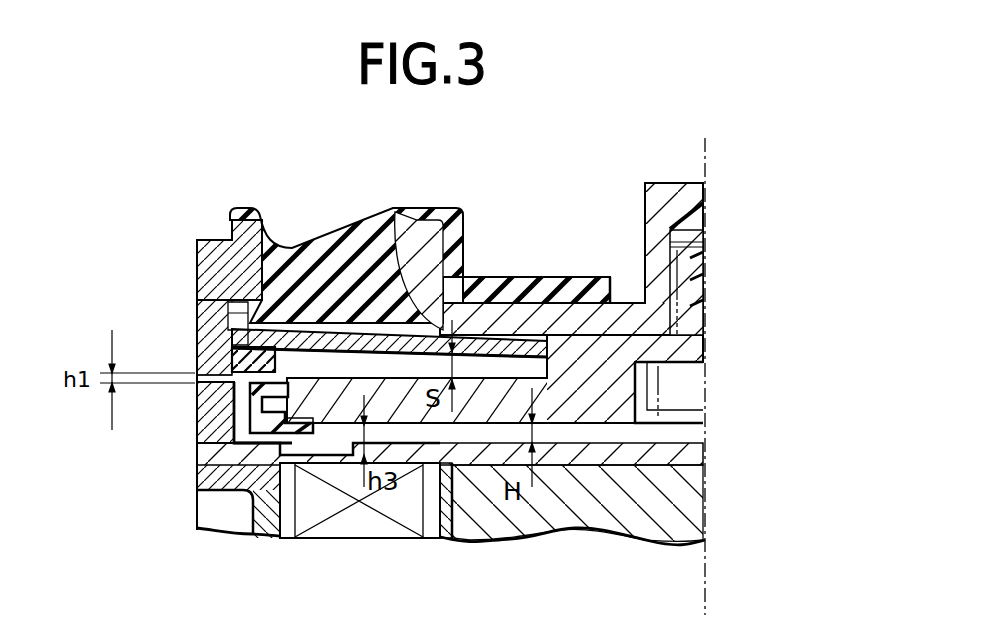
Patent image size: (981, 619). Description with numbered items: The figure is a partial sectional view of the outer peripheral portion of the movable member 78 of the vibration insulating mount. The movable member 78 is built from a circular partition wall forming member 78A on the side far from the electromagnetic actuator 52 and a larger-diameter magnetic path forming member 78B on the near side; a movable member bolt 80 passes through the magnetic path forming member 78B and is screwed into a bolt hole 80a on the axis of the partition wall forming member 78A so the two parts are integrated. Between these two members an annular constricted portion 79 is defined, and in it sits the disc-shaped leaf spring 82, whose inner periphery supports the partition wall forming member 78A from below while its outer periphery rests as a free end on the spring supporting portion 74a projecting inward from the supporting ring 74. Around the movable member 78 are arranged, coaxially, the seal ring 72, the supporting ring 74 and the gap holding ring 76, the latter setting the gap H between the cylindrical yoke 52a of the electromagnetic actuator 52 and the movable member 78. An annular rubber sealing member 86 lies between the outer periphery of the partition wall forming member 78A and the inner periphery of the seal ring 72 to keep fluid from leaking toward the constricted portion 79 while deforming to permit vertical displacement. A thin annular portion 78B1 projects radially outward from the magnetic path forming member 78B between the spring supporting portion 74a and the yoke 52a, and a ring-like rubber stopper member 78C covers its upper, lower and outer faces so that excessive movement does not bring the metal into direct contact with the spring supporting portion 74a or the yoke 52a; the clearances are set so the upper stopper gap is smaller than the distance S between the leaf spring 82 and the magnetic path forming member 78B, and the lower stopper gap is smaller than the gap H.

The electromagnetic actuator 52 is at (595, 505).
The cylindrical yoke 52a is at (266, 525).
The seal ring 72 is at (222, 263).
The supporting ring 74 is at (240, 333).
The spring supporting portion 74a is at (270, 360).
The gap holding ring 76 is at (212, 400).
The movable member 78 is at (641, 202).
The partition wall forming member 78A is at (518, 312).
The magnetic path forming member 78B is at (615, 352).
The thin annular portion 78B1 is at (240, 430).
The stopper member 78C is at (262, 456).
The constricted portion 79 is at (405, 367).
The movable member bolt 80 is at (688, 386).
The bolt hole 80a is at (690, 288).
The leaf spring 82 is at (228, 322).
The sealing member 86 is at (343, 247).